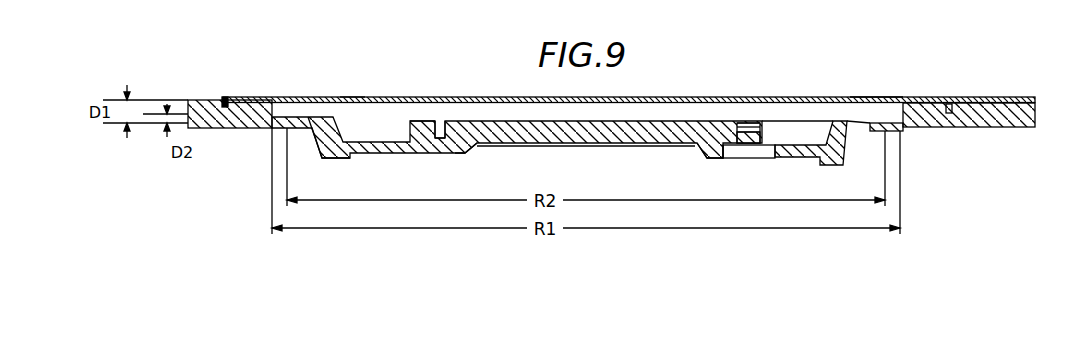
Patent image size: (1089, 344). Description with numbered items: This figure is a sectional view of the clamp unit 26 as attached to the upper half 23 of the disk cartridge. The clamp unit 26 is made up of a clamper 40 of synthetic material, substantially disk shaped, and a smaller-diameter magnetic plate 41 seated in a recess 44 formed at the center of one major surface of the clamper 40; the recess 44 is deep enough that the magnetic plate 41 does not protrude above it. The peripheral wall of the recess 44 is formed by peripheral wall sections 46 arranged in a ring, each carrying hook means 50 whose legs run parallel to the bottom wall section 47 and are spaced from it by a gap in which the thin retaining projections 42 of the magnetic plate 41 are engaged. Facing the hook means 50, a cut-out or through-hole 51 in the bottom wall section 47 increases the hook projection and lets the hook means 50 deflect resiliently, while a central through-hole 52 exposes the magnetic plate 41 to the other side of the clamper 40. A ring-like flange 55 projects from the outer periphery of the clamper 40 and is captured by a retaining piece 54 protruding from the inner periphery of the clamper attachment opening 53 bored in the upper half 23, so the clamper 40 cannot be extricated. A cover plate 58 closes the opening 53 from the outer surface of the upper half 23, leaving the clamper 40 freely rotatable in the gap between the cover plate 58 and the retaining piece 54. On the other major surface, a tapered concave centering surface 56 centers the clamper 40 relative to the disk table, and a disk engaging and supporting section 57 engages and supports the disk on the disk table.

The upper half 23 is at (1037, 111).
The clamp unit 26 is at (330, 106).
The clamper 40 is at (317, 150).
The magnetic plate 41 is at (672, 121).
The retaining projections 42 is at (776, 129).
The recess 44 is at (446, 126).
The peripheral wall sections 46 is at (428, 122).
The bottom wall section 47 is at (470, 154).
The hook means 50 is at (751, 122).
The cut-out or through-hole 51 is at (776, 159).
The through-hole 52 is at (507, 147).
The clamper attachment opening 53 is at (902, 103).
The retaining piece 54 is at (890, 132).
The ring-like flange 55 is at (867, 98).
The tapered concave centering surface 56 is at (712, 159).
The disk engaging and supporting section 57 is at (832, 166).
The cover plate 58 is at (352, 97).